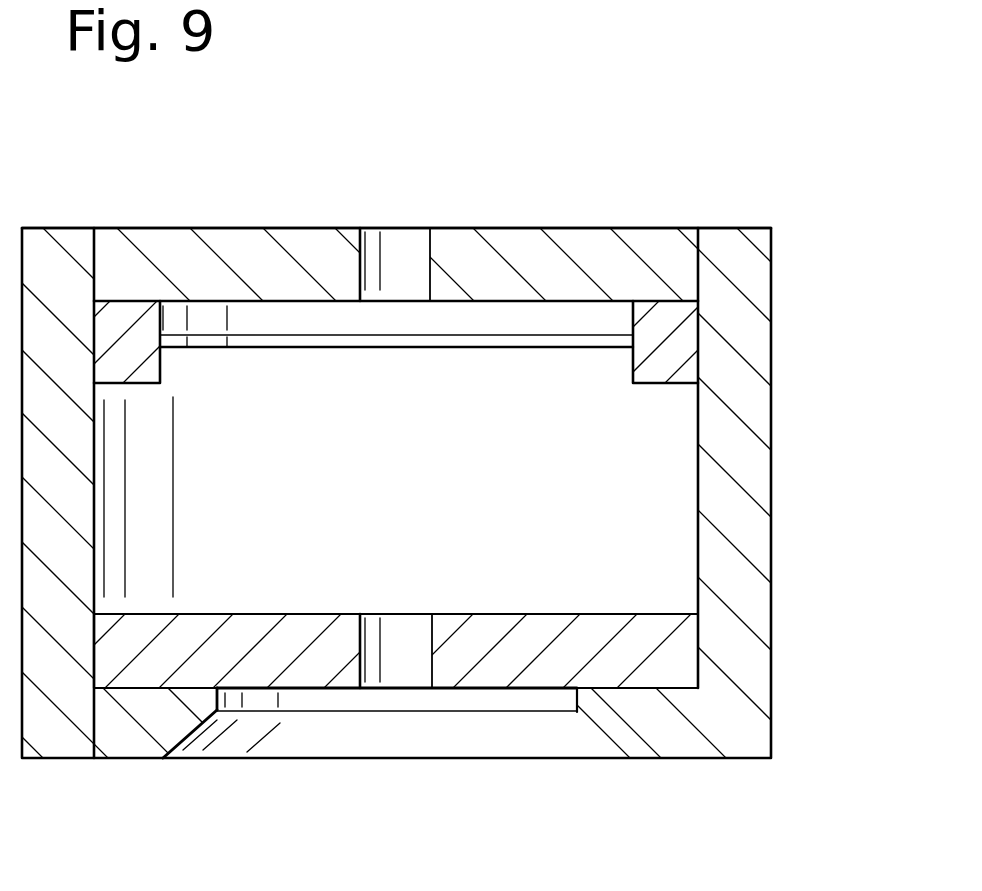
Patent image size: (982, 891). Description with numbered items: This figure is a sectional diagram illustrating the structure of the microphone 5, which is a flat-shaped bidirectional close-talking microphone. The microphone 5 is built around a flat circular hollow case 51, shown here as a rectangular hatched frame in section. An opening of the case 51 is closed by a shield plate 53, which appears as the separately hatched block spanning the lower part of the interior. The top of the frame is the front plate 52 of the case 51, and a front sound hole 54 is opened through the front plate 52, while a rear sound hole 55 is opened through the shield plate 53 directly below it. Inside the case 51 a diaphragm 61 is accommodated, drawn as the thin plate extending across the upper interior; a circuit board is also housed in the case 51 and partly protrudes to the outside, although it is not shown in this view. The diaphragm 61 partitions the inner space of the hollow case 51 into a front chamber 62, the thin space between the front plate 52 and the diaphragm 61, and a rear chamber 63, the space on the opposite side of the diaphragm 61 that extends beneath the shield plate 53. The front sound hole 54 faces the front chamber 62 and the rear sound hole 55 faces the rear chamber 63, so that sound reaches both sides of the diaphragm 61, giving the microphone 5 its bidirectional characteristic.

The microphone 5 is at (638, 213).
The case 51 is at (772, 487).
The front plate 52 is at (148, 233).
The shield plate 53 is at (505, 678).
The front sound hole 54 is at (397, 245).
The rear sound hole 55 is at (398, 672).
The diaphragm 61 is at (535, 343).
The front chamber 62 is at (284, 310).
The rear chamber 63 is at (268, 572).